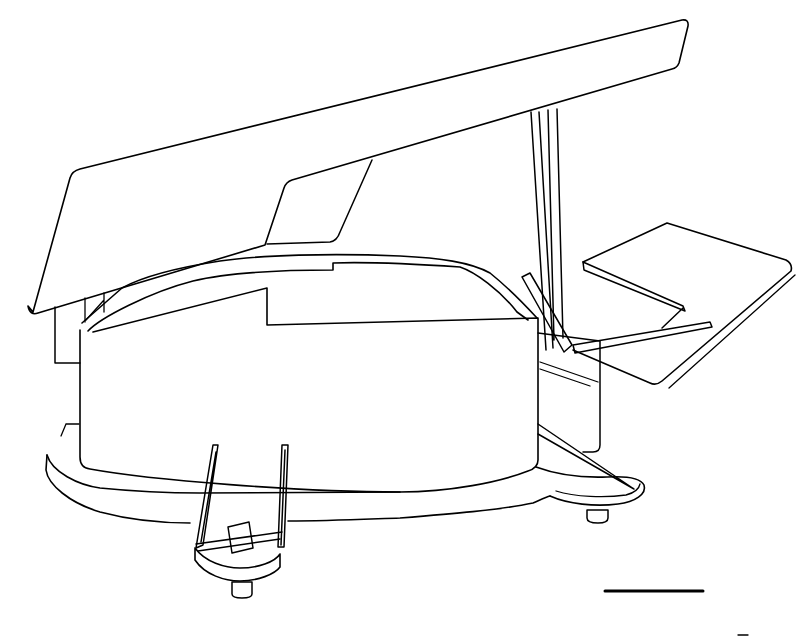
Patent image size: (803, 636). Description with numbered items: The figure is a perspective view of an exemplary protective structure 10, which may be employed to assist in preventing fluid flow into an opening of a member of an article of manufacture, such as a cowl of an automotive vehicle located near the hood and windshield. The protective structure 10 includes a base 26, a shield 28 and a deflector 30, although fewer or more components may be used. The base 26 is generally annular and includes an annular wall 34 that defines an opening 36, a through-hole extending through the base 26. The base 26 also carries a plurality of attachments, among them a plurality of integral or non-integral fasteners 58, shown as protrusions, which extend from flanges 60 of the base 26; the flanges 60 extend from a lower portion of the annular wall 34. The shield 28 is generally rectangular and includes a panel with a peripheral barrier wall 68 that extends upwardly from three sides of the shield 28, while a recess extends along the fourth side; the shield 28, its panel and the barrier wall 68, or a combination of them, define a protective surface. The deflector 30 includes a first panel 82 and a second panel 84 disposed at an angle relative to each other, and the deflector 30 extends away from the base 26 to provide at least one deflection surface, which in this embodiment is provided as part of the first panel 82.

The protective structure 10 is at (220, 75).
The base 26 is at (453, 483).
The shield 28 is at (137, 170).
The deflector 30 is at (710, 294).
The annular wall 34 is at (394, 412).
The opening 36 is at (390, 282).
The fasteners 58 is at (597, 524).
The flanges 60 is at (638, 484).
The barrier wall 68 is at (353, 120).
The first panel 82 is at (763, 292).
The second panel 84 is at (657, 370).